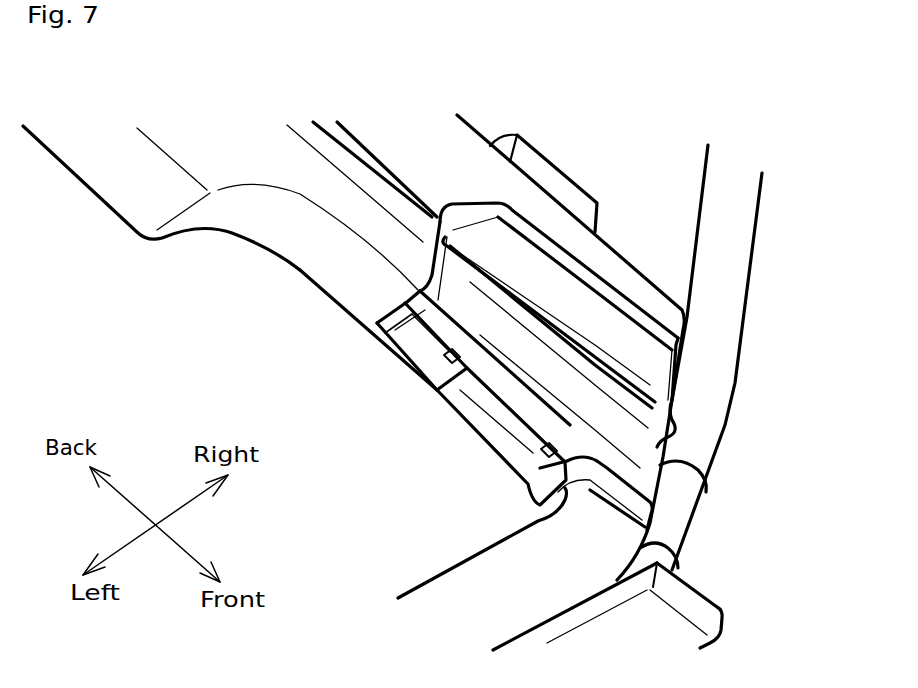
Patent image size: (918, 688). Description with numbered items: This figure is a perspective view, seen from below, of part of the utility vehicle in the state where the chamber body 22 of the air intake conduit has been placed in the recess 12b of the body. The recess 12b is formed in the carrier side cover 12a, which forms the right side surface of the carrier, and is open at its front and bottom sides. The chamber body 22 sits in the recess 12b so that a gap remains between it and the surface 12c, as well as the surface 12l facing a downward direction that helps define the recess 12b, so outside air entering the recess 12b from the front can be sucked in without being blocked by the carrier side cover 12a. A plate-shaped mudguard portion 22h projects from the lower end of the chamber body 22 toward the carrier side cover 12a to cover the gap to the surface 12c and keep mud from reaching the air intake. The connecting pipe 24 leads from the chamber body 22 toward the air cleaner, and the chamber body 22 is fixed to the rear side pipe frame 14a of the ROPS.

The carrier side cover 12a is at (300, 270).
The recess 12b is at (425, 376).
The surface of the recess 12c is at (400, 337).
The surface facing a downward direction 12l is at (572, 272).
The chamber body 22 is at (585, 313).
The mudguard portion 22h is at (495, 452).
The rear side pipe frame 14a is at (740, 280).
The connecting pipe 24 is at (445, 570).